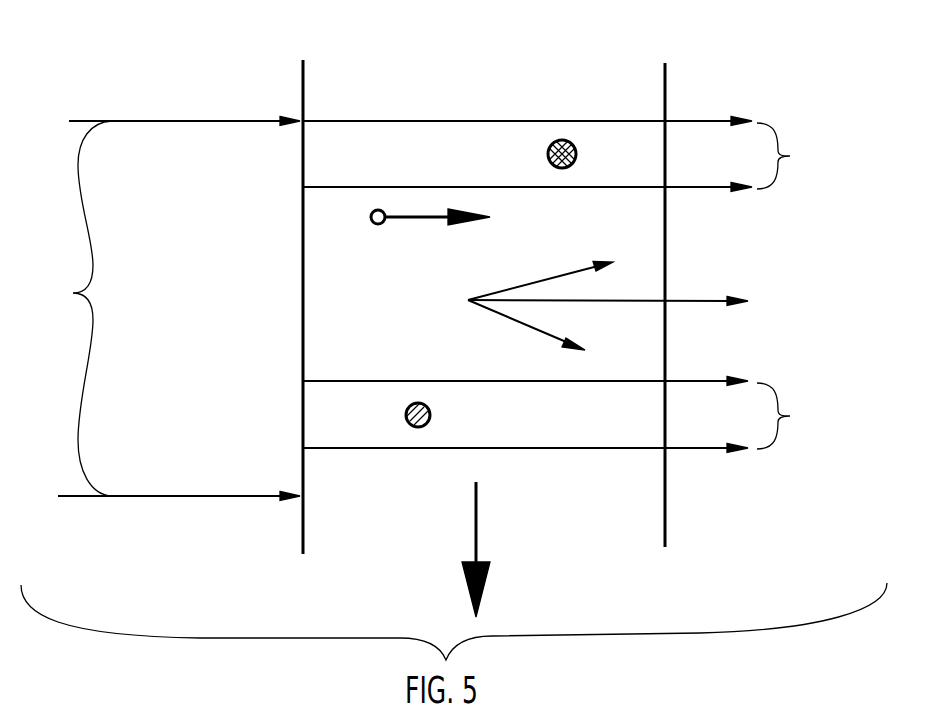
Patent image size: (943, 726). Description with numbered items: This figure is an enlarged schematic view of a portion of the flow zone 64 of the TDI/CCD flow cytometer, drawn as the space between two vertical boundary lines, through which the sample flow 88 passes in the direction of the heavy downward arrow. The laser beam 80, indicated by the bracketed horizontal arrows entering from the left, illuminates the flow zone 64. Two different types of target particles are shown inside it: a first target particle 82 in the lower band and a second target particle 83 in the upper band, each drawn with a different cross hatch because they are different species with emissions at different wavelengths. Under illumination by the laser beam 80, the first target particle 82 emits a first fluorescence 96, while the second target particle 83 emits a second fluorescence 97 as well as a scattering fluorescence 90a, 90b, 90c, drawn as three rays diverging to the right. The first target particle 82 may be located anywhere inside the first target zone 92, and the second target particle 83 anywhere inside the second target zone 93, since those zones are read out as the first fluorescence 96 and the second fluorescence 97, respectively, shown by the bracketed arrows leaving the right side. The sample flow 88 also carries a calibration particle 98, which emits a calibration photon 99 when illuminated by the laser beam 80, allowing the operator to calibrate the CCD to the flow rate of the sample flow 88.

The flow zone 64 is at (363, 95).
The laser beam 80 is at (73, 293).
The second target zone 93 is at (458, 147).
The second target particle 83 is at (578, 147).
The calibration particle 98 is at (371, 219).
The calibration photon 99 is at (414, 219).
The scattering fluorescence 90a is at (567, 268).
The scattering fluorescence 90b is at (698, 300).
The scattering fluorescence 90c is at (525, 328).
The first target zone 92 is at (352, 413).
The first target particle 82 is at (430, 409).
The sample flow 88 is at (478, 524).
The second fluorescence 97 is at (790, 156).
The first fluorescence 96 is at (783, 416).